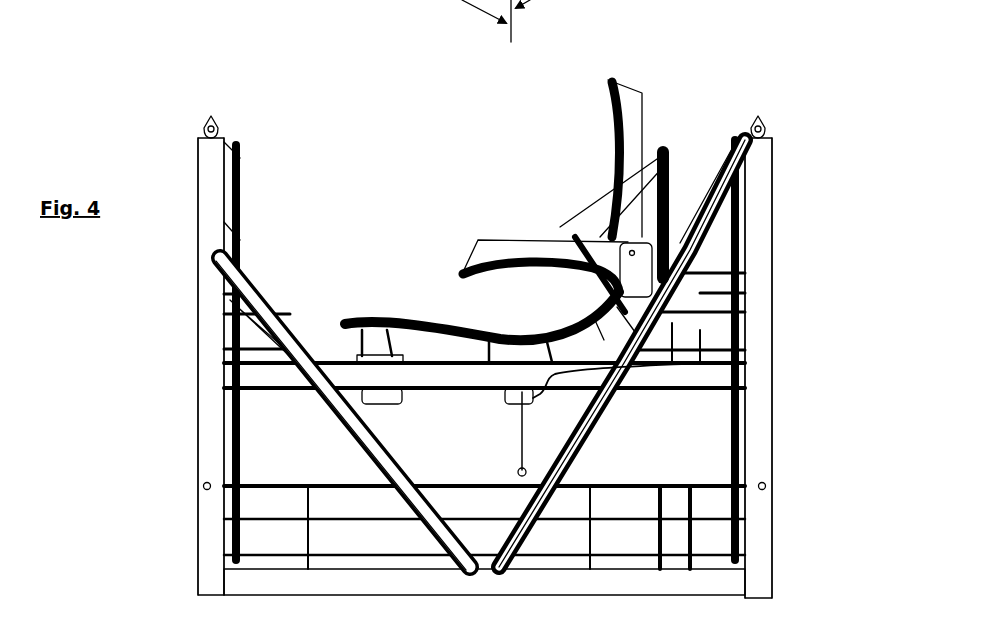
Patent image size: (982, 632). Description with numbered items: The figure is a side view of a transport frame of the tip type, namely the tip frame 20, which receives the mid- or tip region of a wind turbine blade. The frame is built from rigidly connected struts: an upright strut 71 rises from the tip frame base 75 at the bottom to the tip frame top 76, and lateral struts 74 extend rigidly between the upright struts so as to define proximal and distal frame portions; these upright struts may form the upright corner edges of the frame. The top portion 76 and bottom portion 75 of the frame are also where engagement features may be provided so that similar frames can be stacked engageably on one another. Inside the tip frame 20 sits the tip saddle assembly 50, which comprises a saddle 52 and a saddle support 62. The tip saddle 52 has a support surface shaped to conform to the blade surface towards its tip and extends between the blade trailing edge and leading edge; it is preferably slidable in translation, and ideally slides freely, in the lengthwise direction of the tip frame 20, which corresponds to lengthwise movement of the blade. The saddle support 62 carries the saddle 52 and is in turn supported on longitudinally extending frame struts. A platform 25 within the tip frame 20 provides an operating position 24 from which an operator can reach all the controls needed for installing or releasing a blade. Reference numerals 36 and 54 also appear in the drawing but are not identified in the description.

The tip frame 20 is at (72, 117).
The post cap pivot 36 is at (208, 114).
The operating position 24 is at (708, 88).
The tip frame top 76 is at (820, 133).
The tip saddle assembly 50 is at (437, 208).
The tip saddle 52 is at (437, 326).
The platform 25 is at (700, 356).
The cable 54 is at (745, 362).
The lateral struts 74 is at (235, 377).
The proximal upright strut 71 is at (207, 426).
The saddle support 62 is at (618, 424).
The tip frame base 75 is at (168, 588).